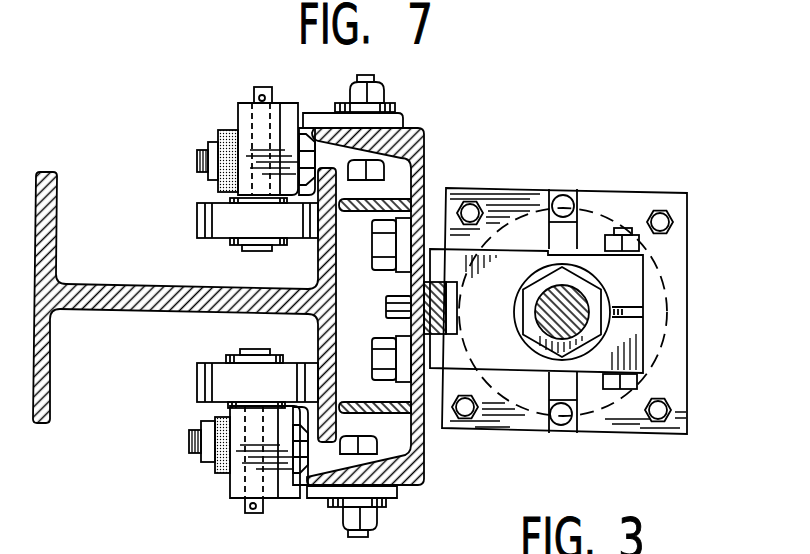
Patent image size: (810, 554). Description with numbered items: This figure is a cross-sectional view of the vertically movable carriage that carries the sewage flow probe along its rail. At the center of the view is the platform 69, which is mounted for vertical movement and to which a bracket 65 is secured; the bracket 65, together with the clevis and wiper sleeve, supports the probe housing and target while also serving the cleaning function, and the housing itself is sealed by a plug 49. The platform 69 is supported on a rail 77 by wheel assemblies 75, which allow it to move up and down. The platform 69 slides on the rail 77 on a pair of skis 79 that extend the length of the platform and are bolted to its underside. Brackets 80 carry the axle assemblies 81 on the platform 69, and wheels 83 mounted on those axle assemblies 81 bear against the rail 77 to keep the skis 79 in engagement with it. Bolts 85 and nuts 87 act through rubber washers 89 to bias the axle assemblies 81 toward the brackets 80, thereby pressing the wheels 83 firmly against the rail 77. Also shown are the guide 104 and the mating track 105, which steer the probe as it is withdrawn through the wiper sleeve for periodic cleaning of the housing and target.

The plug 49 is at (678, 361).
The bracket 65 is at (572, 238).
The platform 69 is at (410, 470).
The wheel assemblies 75 is at (214, 291).
The rail 77 is at (163, 304).
The skis 79 is at (389, 195).
The brackets 80 is at (396, 121).
The axle assemblies 81 is at (278, 116).
The wheels 83 is at (198, 222).
The bolts 85 is at (306, 127).
The nuts 87 is at (213, 140).
The rubber washers 89 is at (207, 174).
The guide 104 is at (473, 316).
The track 105 is at (462, 335).